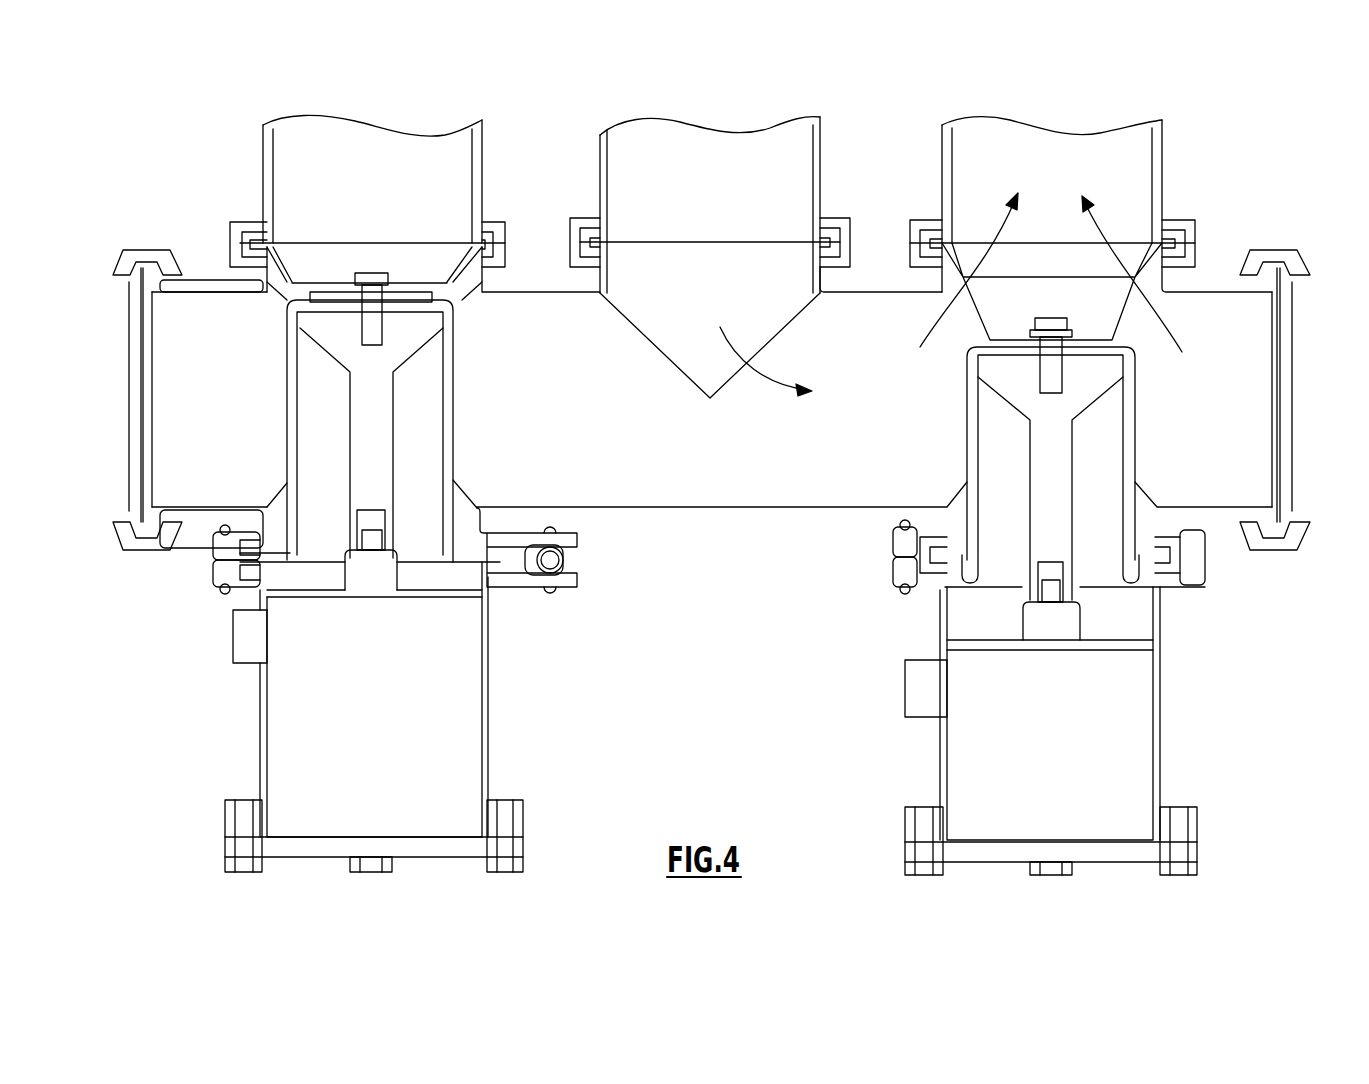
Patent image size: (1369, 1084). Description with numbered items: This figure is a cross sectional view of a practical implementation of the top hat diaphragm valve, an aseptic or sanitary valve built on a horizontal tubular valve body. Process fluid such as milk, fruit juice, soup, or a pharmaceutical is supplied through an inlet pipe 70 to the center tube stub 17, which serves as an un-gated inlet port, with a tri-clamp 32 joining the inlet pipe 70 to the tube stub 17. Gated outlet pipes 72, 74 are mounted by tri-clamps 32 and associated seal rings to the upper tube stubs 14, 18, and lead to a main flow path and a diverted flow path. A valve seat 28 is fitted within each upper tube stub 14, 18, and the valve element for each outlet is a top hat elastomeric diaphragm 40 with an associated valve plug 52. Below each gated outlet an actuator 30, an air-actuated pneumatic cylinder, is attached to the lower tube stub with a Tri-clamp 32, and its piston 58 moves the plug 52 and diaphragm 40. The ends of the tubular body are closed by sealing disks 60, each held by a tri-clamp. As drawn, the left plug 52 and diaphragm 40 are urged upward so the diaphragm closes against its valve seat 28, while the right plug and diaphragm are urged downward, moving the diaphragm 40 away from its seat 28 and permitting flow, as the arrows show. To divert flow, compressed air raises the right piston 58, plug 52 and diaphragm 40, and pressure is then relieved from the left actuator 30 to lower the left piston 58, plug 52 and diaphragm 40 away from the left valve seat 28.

The first upper tube stub 14 is at (263, 278).
The third upper tube stub 17 is at (572, 275).
The second upper tube stub 18 is at (1172, 278).
The valve seat 28 is at (470, 296).
The actuator 30 is at (490, 748).
The Tri-clamp 32 is at (145, 258).
The top hat elastomeric diaphragm 40 is at (453, 427).
The valve plug 52 is at (350, 430).
The piston 58 is at (448, 597).
The sealing disk 60 is at (133, 443).
The inlet pipe 70 is at (820, 135).
The gated outlet pipe 72 is at (1162, 138).
The gated outlet pipe 74 is at (482, 143).